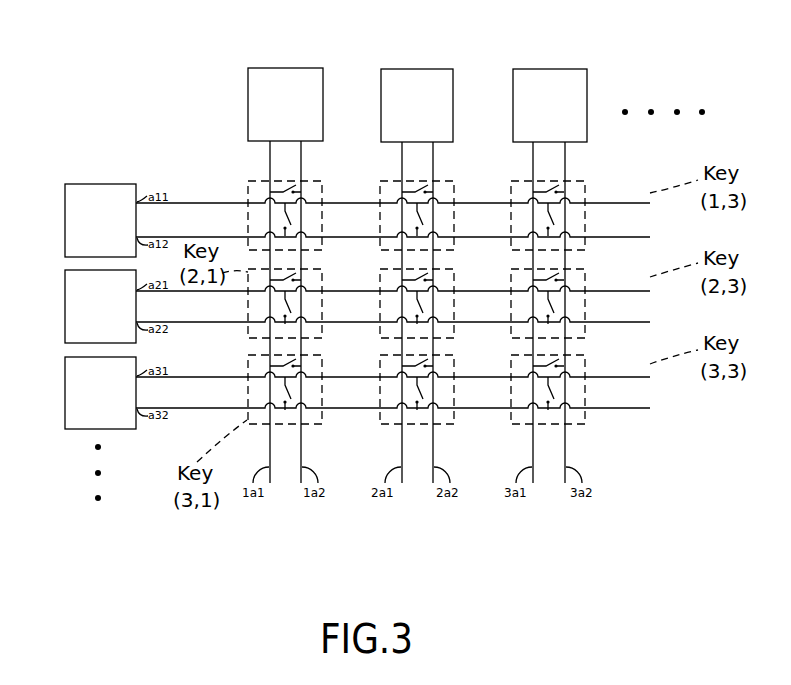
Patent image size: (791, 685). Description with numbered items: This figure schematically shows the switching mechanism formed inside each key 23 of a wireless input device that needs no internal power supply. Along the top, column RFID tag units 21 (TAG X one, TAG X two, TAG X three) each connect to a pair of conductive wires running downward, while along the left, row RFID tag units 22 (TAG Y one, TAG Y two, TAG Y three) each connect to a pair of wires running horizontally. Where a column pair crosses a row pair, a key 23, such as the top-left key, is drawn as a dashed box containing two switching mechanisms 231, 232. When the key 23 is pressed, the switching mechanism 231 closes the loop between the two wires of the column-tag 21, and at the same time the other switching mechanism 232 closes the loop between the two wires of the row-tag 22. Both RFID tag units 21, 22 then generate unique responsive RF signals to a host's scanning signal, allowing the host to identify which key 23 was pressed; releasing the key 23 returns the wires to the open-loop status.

The RFID tag unit 21 is at (283, 68).
The RFID tag unit 22 is at (65, 209).
The key 23 is at (273, 156).
The switching mechanism 231 is at (320, 169).
The switching mechanism 232 is at (329, 219).